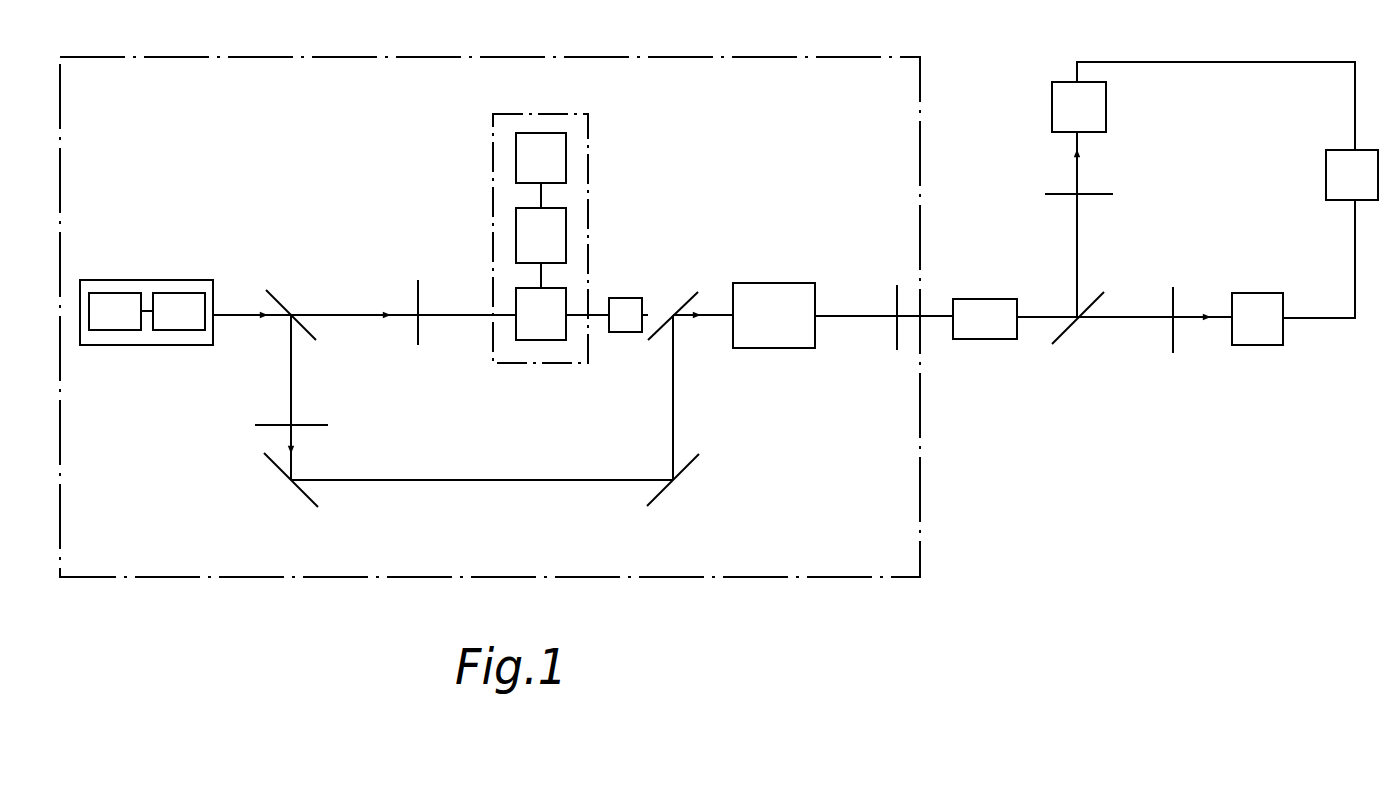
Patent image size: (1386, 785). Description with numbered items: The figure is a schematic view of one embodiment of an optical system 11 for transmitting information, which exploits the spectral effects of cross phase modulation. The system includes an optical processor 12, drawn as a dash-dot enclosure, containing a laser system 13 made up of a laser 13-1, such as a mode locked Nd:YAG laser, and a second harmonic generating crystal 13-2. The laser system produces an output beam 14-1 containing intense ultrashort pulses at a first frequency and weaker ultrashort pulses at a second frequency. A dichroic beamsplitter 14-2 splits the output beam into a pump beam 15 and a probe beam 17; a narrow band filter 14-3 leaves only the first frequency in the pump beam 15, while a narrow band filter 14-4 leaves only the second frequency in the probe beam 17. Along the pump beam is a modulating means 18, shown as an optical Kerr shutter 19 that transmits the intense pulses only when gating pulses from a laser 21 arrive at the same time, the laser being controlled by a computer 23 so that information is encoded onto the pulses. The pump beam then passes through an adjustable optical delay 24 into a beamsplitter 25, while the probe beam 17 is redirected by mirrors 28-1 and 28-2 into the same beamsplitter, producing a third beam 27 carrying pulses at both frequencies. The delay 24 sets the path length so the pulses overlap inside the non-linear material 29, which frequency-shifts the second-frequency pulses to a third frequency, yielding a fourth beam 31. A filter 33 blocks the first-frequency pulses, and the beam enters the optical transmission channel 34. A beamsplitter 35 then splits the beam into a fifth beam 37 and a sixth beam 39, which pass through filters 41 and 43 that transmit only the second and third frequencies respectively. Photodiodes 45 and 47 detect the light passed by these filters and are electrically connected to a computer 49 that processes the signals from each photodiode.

The optical system 11 is at (934, 628).
The optical processor 12 is at (495, 54).
The laser system 13 is at (146, 285).
The laser 13-1 is at (115, 311).
The second harmonic generating crystal 13-2 is at (179, 311).
The output beam 14-1 is at (233, 316).
The dichroic beamsplitter 14-2 is at (277, 295).
The narrow band filter 14-3 is at (458, 272).
The narrow band filter 14-4 is at (315, 425).
The pump beam 15 is at (338, 308).
The probe beam 17 is at (291, 369).
The modulating means 18 is at (493, 126).
The optical Kerr shutter 19 is at (566, 297).
The laser 21 is at (566, 223).
The computer 23 is at (566, 152).
The adjustable optical delay 24 is at (643, 302).
The beamsplitter 25 is at (662, 333).
The third beam 27 is at (724, 318).
The mirror 28-1 is at (295, 493).
The mirror 28-2 is at (663, 497).
The non-linear material 29 is at (770, 283).
The fourth beam 31 is at (842, 316).
The filter 33 is at (897, 298).
The optical transmission channel 34 is at (988, 299).
The beamsplitter 35 is at (1065, 327).
The fifth beam 37 is at (1133, 317).
The sixth beam 39 is at (1077, 228).
The filter 41 is at (1173, 340).
The filter 43 is at (1105, 194).
The photodiode 45 is at (1106, 100).
The photodiode 47 is at (1283, 335).
The computer 49 is at (1326, 180).